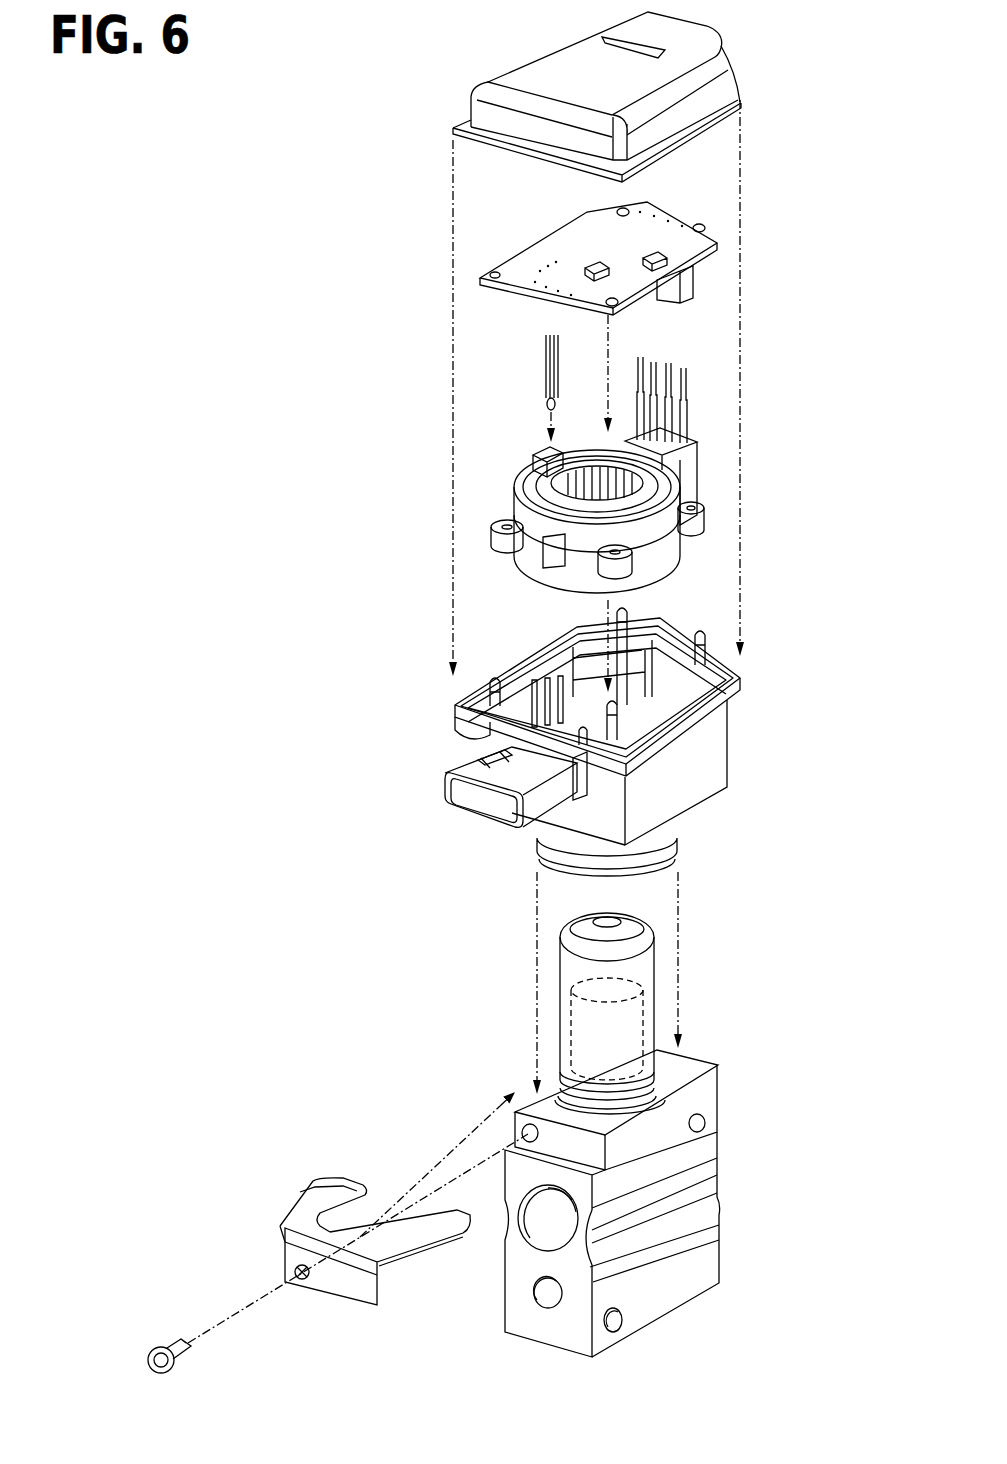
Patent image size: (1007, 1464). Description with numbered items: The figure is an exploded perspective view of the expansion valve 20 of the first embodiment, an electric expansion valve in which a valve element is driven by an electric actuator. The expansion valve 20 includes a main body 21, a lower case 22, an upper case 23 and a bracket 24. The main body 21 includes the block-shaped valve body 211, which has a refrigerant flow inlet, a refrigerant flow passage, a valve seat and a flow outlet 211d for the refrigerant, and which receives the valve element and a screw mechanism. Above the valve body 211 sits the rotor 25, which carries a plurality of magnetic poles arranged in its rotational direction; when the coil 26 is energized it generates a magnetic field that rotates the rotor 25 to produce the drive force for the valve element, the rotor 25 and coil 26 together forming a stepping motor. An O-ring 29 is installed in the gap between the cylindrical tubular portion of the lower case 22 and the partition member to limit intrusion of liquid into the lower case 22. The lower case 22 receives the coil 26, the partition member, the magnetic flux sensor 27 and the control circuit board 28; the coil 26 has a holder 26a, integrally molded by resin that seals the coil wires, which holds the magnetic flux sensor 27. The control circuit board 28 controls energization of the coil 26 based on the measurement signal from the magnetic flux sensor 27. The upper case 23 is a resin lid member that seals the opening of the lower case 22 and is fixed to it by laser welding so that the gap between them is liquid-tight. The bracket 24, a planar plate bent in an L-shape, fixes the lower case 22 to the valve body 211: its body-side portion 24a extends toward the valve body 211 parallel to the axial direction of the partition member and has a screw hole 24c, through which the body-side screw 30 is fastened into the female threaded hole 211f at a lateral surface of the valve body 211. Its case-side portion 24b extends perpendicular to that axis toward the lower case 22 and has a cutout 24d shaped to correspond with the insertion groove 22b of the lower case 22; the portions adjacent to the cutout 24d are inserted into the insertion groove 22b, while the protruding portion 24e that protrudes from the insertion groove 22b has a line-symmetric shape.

The expansion valve 20 is at (404, 152).
The main body 21 is at (600, 1221).
The lower case 22 is at (735, 725).
The insertion groove 22b is at (580, 878).
The upper case 23 is at (745, 74).
The bracket 24 is at (301, 1253).
The body-side portion 24a is at (358, 1306).
The case-side portion 24b is at (432, 1250).
The screw hole 24c is at (302, 1281).
The cutout 24d is at (372, 1207).
The protruding portion 24e is at (315, 1232).
The rotor 25 is at (558, 1036).
The coil 26 is at (694, 549).
The holder 26a is at (545, 455).
The magnetic flux sensor 27 is at (545, 405).
The control circuit board 28 is at (717, 228).
The O-ring 29 is at (660, 1084).
The body-side screw 30 is at (153, 1346).
The valve body 211 is at (719, 1240).
The flow outlet 211d is at (532, 1250).
The female threaded hole 211f is at (507, 1147).